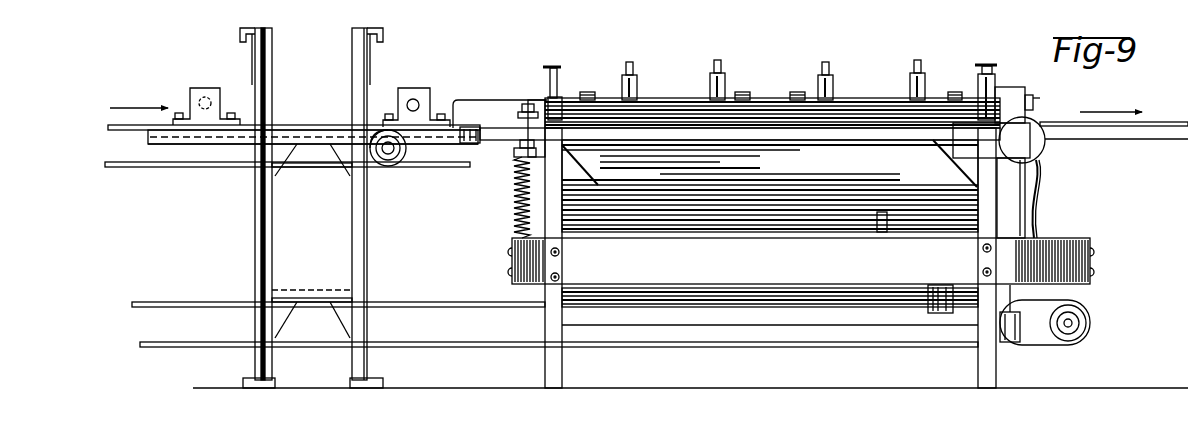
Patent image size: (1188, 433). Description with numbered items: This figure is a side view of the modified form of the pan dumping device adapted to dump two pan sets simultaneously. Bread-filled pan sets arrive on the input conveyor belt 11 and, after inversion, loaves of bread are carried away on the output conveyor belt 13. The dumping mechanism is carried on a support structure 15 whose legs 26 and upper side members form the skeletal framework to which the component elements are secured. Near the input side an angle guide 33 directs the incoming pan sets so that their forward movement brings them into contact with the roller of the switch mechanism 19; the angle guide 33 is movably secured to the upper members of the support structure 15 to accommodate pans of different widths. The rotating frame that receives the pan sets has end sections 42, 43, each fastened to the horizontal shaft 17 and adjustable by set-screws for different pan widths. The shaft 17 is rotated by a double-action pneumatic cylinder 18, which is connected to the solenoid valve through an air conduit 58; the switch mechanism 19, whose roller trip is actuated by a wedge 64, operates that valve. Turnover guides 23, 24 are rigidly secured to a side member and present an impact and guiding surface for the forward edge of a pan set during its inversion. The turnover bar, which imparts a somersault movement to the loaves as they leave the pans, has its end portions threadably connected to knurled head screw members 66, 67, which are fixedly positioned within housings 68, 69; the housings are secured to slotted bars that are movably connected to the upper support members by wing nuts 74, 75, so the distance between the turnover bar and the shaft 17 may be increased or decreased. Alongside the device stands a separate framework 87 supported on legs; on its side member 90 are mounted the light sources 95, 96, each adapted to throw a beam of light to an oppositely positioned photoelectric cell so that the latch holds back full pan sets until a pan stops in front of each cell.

The input conveyor belt 11 is at (120, 128).
The output conveyor belt 13 is at (437, 300).
The support structure 15 is at (1090, 258).
The horizontal shaft 17 is at (886, 86).
The double-action pneumatic cylinder 18 is at (1041, 145).
The switch mechanism 19 is at (1027, 86).
The turnover guide 23 is at (740, 92).
The turnover guide 24 is at (586, 92).
The legs 26 is at (562, 375).
The angle guide 33 is at (485, 100).
The end section 42 is at (719, 64).
The end section 43 is at (628, 66).
The air conduit 58 is at (1042, 184).
The wedge 64 is at (1036, 101).
The knurled head screw member 66 is at (989, 64).
The knurled head screw member 67 is at (553, 66).
The housing 68 is at (995, 84).
The housing 69 is at (557, 86).
The wing nut 74 is at (548, 121).
The wing nut 75 is at (986, 123).
The framework 87 is at (368, 237).
The side member 90 is at (178, 144).
The light source 95 is at (205, 88).
The light source 96 is at (412, 88).